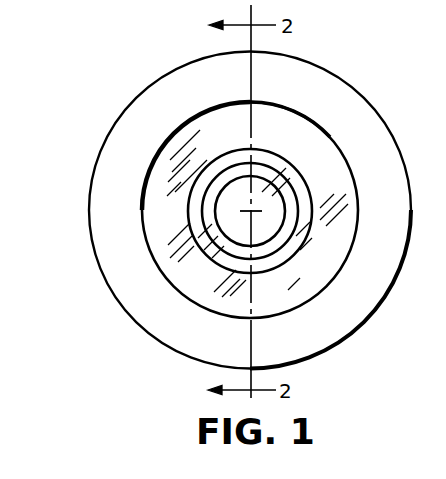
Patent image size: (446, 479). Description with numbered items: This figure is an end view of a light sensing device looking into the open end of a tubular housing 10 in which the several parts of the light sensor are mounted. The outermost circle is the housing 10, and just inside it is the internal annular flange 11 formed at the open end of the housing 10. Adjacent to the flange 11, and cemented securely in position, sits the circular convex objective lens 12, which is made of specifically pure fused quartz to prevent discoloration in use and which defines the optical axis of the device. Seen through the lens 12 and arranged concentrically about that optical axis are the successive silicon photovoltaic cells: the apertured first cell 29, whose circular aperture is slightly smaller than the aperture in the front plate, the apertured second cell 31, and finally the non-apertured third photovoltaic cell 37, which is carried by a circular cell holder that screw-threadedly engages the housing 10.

The tubular housing 10 is at (362, 94).
The internal annular flange 11 is at (291, 103).
The circular convex objective lens 12 is at (157, 209).
The silicon photovoltaic cell 29 is at (261, 155).
The silicon photovoltaic cell 31 is at (287, 186).
The non-apertured silicon photovoltaic cell 37 is at (271, 228).